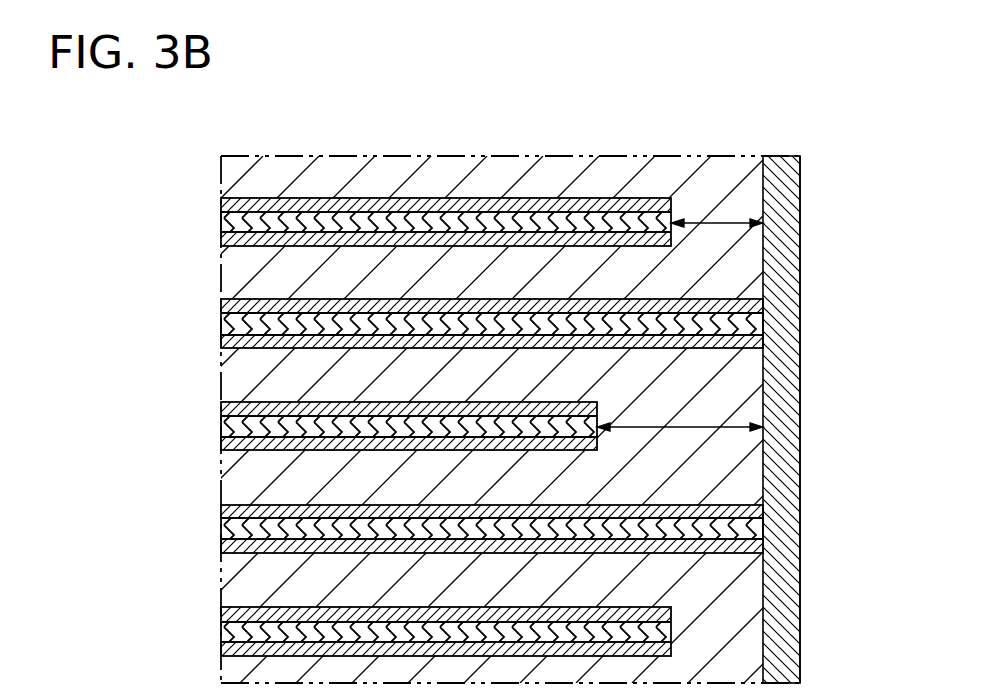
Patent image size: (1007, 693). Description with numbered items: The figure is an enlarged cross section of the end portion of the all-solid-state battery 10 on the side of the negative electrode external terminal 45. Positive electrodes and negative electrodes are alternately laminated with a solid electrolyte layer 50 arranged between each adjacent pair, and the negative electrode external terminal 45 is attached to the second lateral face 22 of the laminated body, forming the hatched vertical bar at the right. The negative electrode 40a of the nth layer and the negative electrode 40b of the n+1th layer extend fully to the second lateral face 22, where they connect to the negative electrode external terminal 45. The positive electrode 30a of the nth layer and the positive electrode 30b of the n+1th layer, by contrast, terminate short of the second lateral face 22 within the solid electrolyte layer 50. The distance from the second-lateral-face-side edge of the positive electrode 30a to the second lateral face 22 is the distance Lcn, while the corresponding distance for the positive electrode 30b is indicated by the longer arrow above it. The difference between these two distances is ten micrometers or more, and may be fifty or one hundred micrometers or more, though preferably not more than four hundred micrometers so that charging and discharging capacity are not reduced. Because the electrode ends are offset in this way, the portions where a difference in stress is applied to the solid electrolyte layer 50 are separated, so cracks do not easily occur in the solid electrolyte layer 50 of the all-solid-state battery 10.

The all-solid-state battery 10 is at (800, 146).
The second lateral face 22 is at (765, 281).
The positive electrode of the nth layer 30a is at (205, 429).
The positive electrode of the n+1th layer 30b is at (205, 224).
The negative electrode of the nth layer 40a is at (778, 527).
The negative electrode of the n+1th layer 40b is at (778, 325).
The negative electrode external terminal 45 is at (782, 592).
The solid electrolyte layer 50 is at (503, 171).
The distance Lcn is at (697, 427).